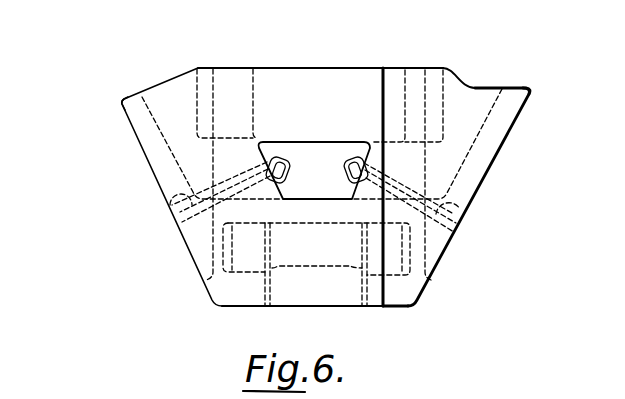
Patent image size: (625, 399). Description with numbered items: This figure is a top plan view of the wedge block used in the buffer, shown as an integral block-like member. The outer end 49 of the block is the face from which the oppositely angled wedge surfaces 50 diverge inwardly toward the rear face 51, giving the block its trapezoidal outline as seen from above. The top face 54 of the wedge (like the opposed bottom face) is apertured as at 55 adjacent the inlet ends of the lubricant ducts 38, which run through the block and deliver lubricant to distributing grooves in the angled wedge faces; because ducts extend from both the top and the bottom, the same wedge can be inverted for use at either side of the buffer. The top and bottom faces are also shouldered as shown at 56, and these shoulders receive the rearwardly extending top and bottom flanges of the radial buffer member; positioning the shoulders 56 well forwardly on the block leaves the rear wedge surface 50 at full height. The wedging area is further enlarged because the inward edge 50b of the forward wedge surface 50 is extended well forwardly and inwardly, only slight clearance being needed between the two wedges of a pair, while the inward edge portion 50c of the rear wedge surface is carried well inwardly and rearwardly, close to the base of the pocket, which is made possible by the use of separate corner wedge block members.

The lubricant ducts 38 is at (168, 206).
The outer end 49 is at (398, 307).
The wedge surfaces 50 is at (148, 160).
The inward edge of forward wedge surface 50b is at (534, 90).
The inward edge portion of rear wedge surface 50c is at (120, 102).
The rear face 51 is at (387, 67).
The top face 54 is at (313, 90).
The apertures 55 is at (334, 142).
The shoulders 56 is at (387, 97).